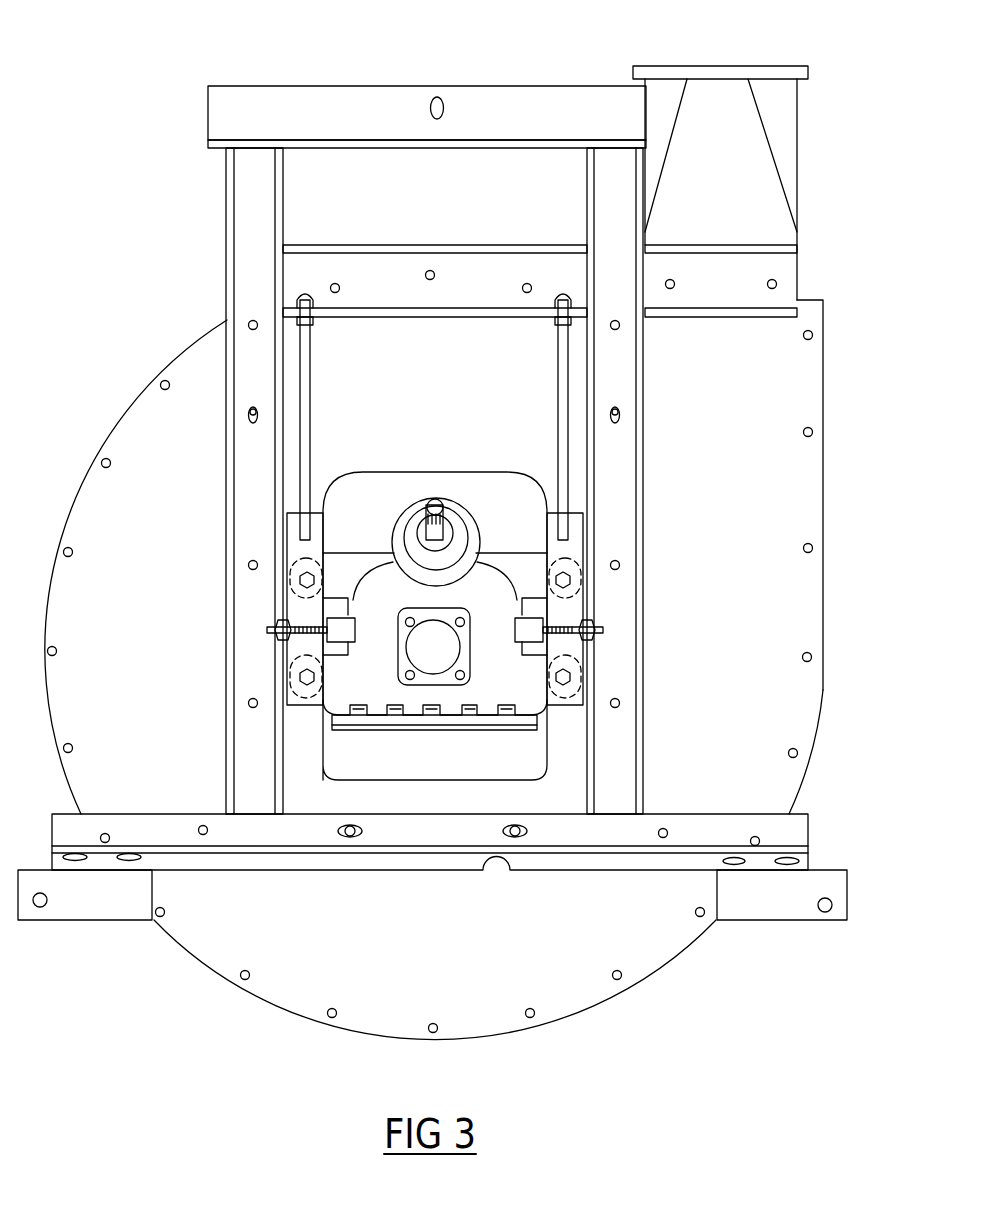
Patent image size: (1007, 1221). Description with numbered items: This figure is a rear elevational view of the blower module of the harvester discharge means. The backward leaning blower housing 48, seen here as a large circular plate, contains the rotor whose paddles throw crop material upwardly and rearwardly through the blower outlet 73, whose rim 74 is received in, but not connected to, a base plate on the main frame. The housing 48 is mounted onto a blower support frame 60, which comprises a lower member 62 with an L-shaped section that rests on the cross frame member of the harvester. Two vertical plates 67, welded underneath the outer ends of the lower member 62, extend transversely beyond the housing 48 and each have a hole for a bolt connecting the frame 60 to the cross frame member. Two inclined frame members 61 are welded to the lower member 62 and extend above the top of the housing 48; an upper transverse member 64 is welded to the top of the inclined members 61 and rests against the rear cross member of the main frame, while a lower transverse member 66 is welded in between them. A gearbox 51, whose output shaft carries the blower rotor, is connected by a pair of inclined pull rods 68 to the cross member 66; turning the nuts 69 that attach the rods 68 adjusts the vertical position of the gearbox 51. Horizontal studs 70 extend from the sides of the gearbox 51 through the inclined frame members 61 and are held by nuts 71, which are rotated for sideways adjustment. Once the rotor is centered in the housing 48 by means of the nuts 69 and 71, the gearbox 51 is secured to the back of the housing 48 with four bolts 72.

The blower housing 48 is at (147, 412).
The gearbox 51 is at (465, 517).
The blower support frame 60 is at (190, 243).
The inclined frame members 61 is at (265, 178).
The lower member 62 is at (795, 835).
The upper transverse member 64 is at (471, 137).
The lower transverse member 66 is at (315, 260).
The vertical plates 67 is at (90, 907).
The inclined pull rods 68 is at (562, 395).
The nuts 69 is at (553, 320).
The horizontal studs 70 is at (583, 618).
The nuts 71 is at (592, 637).
The bolts 72 is at (564, 686).
The blower outlet 73 is at (763, 205).
The rim 74 is at (755, 70).